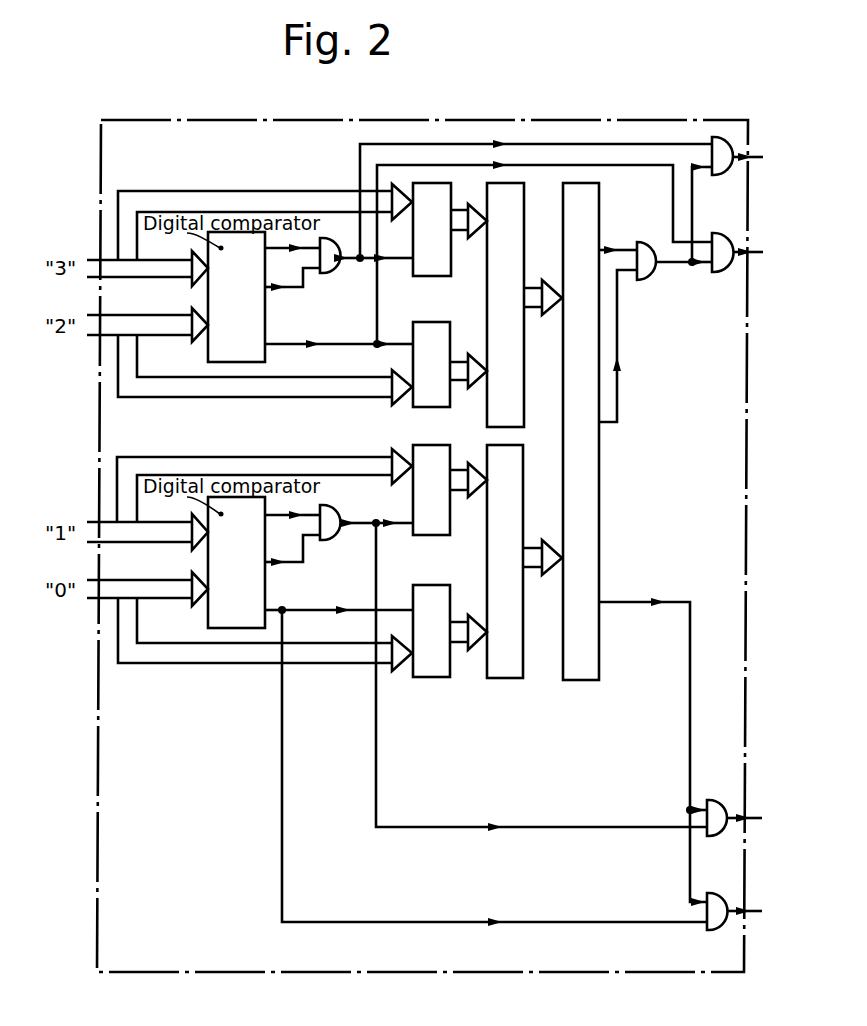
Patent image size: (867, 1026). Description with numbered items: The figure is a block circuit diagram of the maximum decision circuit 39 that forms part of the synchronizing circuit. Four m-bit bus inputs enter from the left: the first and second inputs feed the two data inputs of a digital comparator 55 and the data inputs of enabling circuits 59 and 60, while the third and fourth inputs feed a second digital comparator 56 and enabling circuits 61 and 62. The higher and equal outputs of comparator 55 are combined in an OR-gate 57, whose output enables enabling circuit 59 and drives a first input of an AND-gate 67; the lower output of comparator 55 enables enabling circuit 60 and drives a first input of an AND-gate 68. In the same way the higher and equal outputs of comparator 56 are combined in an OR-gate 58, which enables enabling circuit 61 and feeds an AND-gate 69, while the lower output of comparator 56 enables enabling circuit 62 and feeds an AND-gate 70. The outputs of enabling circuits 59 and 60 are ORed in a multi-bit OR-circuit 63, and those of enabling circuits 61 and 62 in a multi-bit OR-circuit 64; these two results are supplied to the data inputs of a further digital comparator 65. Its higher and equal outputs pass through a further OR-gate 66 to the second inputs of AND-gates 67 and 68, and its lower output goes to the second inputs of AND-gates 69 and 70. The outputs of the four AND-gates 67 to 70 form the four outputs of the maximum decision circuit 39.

The maximum decision circuit 39 is at (483, 972).
The digital comparator 55 is at (265, 300).
The digital comparator 56 is at (265, 570).
The OR-gate 57 is at (335, 273).
The OR-gate 58 is at (335, 540).
The enabling circuit 59 is at (450, 276).
The enabling circuit 60 is at (450, 407).
The enabling circuit 61 is at (450, 535).
The enabling circuit 62 is at (450, 677).
The multi-bit OR-circuit 63 is at (524, 360).
The multi-bit OR-circuit 64 is at (523, 625).
The digital comparator 65 is at (598, 625).
The OR-gate 66 is at (645, 280).
The AND-gate 67 is at (722, 175).
The AND-gate 68 is at (722, 272).
The AND-gate 69 is at (718, 836).
The AND-gate 70 is at (718, 930).